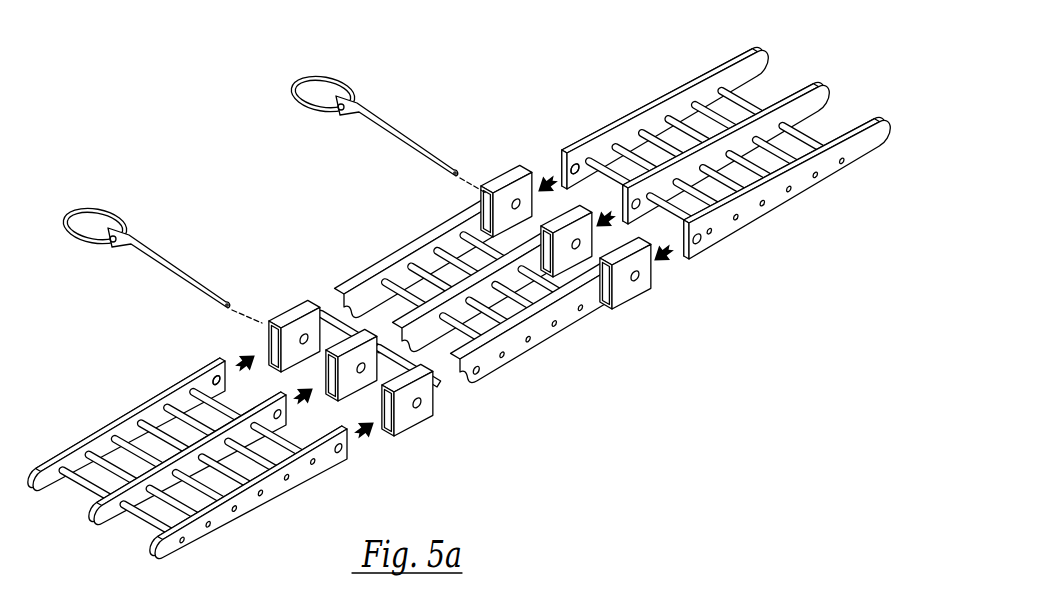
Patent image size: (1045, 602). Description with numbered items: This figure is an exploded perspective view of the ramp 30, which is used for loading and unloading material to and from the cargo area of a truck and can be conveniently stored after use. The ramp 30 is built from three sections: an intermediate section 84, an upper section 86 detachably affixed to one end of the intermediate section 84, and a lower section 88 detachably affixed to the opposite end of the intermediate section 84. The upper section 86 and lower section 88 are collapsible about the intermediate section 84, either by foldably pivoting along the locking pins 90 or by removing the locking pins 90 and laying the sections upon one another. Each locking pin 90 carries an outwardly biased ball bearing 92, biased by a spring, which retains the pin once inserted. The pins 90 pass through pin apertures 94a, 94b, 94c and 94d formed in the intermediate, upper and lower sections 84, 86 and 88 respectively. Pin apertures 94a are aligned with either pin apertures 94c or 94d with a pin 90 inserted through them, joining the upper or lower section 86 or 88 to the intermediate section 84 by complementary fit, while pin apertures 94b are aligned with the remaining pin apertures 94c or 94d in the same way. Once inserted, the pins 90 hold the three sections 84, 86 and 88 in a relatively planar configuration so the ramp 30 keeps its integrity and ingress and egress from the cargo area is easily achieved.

The ramp 30 is at (210, 149).
The intermediate section 84 is at (405, 448).
The upper section 86 is at (697, 272).
The lower section 88 is at (175, 580).
The locking pin 90 is at (380, 138).
The outwardly biased ball bearing 92 is at (453, 167).
The pin apertures 94a is at (485, 201).
The pin apertures 94b is at (295, 340).
The pin apertures 94c is at (577, 166).
The pin apertures 94d is at (216, 376).